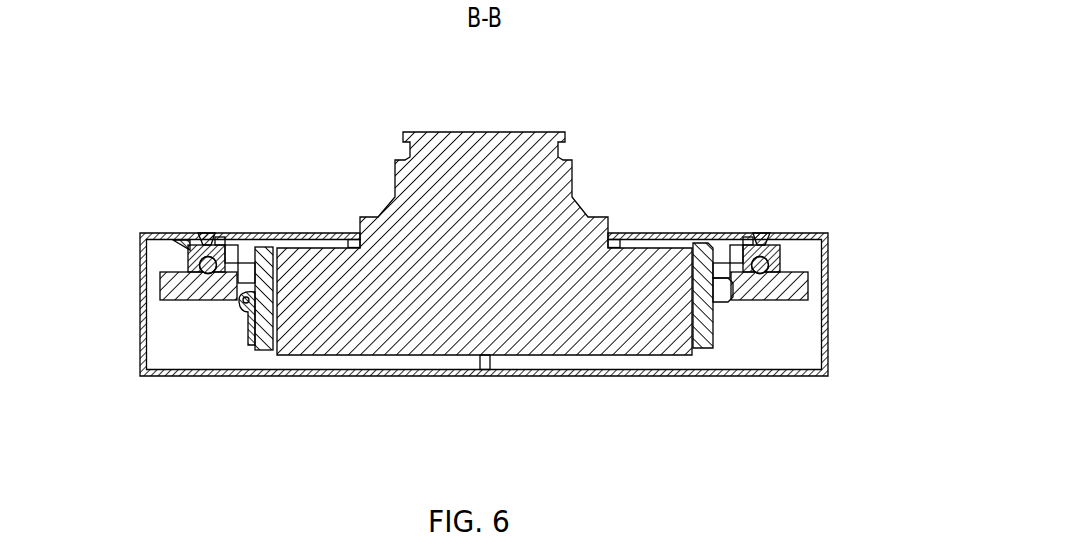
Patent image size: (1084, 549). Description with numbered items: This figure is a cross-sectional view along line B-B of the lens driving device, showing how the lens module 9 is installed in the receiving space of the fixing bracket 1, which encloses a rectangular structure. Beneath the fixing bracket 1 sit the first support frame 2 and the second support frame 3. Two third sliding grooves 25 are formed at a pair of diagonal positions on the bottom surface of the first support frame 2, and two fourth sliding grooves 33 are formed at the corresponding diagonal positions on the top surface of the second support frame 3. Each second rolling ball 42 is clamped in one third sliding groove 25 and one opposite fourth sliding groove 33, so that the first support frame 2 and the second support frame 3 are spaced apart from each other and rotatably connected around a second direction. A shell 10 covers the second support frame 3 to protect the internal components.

The fixing bracket 1 is at (260, 336).
The first support frame 2 is at (205, 240).
The second support frame 3 is at (258, 290).
The lens module 9 is at (423, 203).
The shell 10 is at (828, 285).
The third sliding groove 25 is at (185, 243).
The fourth sliding groove 33 is at (190, 280).
The second rolling ball 42 is at (200, 265).